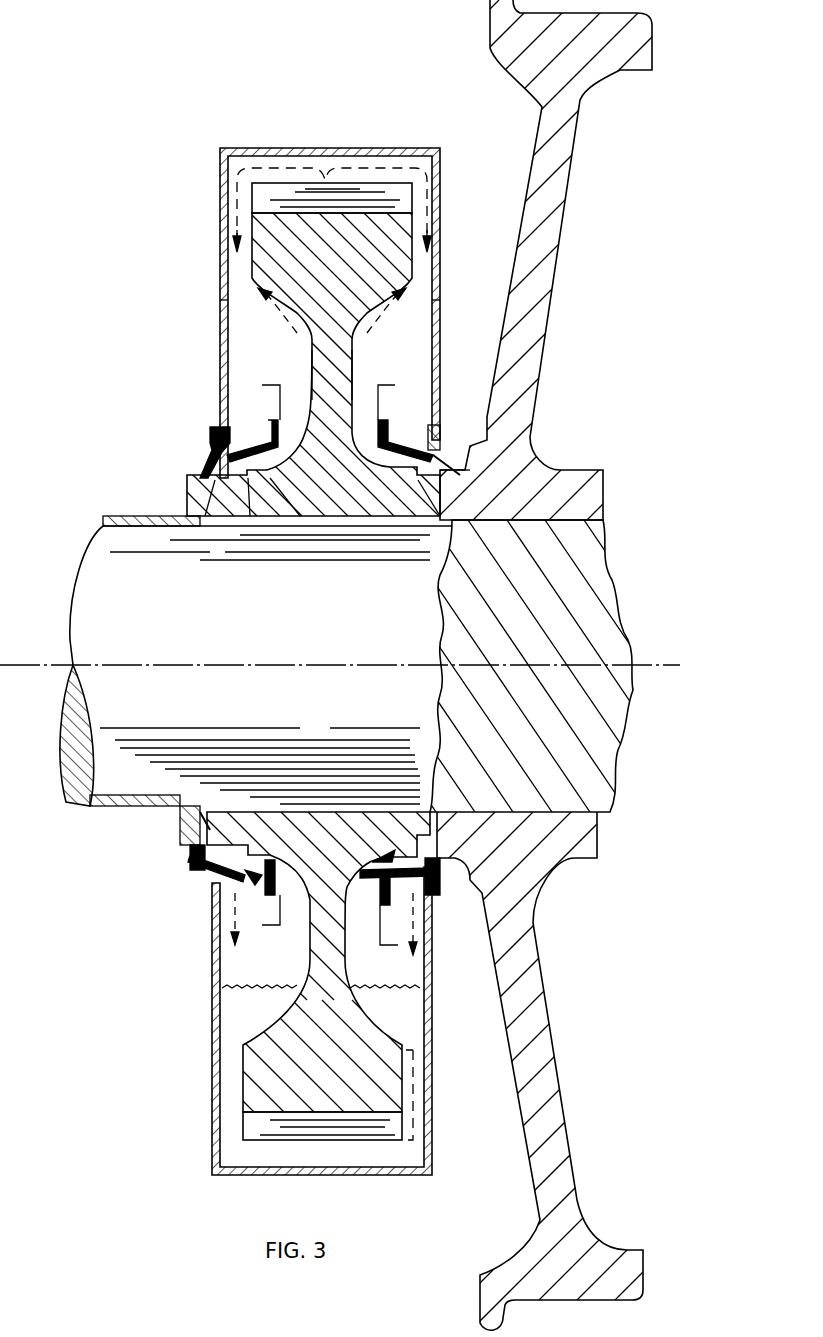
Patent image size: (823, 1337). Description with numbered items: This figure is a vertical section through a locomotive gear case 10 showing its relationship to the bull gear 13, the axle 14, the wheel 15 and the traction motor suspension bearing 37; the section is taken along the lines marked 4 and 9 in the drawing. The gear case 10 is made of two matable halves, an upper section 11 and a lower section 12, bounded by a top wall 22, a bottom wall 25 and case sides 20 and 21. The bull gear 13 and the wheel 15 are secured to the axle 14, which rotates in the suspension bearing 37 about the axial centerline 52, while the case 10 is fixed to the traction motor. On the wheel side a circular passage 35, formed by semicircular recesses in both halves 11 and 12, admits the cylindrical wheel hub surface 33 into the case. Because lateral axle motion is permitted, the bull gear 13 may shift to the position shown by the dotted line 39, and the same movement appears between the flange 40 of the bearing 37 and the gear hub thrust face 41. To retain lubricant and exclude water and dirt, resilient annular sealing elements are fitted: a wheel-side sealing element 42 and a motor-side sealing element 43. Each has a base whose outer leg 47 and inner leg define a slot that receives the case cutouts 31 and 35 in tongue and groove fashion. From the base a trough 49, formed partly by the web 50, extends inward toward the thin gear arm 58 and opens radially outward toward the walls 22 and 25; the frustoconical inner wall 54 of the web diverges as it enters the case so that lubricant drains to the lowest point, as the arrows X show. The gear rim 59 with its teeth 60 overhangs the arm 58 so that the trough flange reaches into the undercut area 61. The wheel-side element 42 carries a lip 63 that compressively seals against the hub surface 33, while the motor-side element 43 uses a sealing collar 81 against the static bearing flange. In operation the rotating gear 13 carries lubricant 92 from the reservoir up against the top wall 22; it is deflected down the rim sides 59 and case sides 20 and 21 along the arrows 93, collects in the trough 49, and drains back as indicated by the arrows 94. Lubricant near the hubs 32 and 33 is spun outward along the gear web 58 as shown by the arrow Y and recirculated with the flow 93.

The gear case 10 is at (180, 244).
The upper section 11 is at (200, 182).
The lower section 12 is at (200, 1140).
The bull gear 13 is at (382, 251).
The axle 14 is at (228, 634).
The wheel 15 is at (640, 48).
The case side 20 is at (222, 299).
The case side 21 is at (441, 299).
The top wall 22 is at (312, 148).
The bottom wall 25 is at (330, 1176).
The cutout 31 is at (218, 500).
The hub 32 is at (252, 498).
The wheel hub surface 33 is at (430, 490).
The passage 35 is at (418, 480).
The traction motor suspension bearing 37 is at (152, 516).
The dotted line 39 is at (418, 1082).
The flange 40 is at (178, 822).
The gear hub thrust face 41 is at (208, 826).
The wheel-side sealing element 42 is at (378, 428).
The motor-side sealing element 43 is at (290, 405).
The outer leg 47 is at (442, 440).
The trough 49 is at (410, 440).
The web 50 is at (245, 878).
The axial centerline 52 is at (636, 664).
The inner wall 54 is at (287, 500).
The gear arm 58 is at (345, 378).
The gear rim 59 is at (275, 235).
The teeth 60 is at (332, 198).
The undercut area 61 is at (243, 330).
The lip 63 is at (462, 468).
The sealing collar 81 is at (188, 474).
The lubricant 92 is at (297, 990).
The arrows 93 is at (393, 160).
The arrows 94 is at (325, 936).
The section line 4 is at (278, 386).
The section line 9 is at (380, 386).